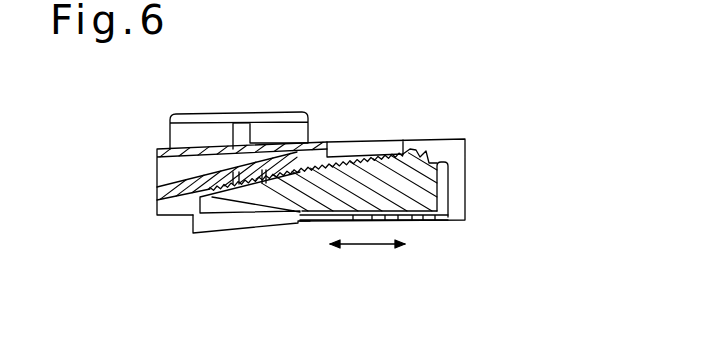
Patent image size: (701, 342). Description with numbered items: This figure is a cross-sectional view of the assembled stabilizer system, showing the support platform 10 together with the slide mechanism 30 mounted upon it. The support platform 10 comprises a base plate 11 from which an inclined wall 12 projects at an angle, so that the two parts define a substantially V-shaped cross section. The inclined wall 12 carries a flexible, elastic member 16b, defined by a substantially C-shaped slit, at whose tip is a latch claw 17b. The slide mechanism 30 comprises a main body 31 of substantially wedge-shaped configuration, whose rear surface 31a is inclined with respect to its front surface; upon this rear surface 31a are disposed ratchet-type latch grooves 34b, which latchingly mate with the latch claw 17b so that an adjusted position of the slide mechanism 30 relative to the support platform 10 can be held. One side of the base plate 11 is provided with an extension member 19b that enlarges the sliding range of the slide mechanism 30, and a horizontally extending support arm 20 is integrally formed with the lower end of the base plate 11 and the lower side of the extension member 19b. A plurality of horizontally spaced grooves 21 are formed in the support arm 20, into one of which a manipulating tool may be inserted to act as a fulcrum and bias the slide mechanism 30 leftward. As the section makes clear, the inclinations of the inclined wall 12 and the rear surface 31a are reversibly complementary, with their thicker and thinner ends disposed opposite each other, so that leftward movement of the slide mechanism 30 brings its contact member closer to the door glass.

The support platform 10 is at (168, 147).
The base plate 11 is at (200, 149).
The inclined wall 12 is at (170, 188).
The elastic member 16b is at (262, 167).
The latch claw 17b is at (240, 168).
The extension member 19b is at (378, 143).
The support arm 20 is at (462, 202).
The grooves 21 is at (445, 221).
The slide mechanism 30 is at (320, 225).
The main body 31 is at (413, 190).
The rear surface 31a is at (354, 160).
The latch grooves 34b is at (286, 185).